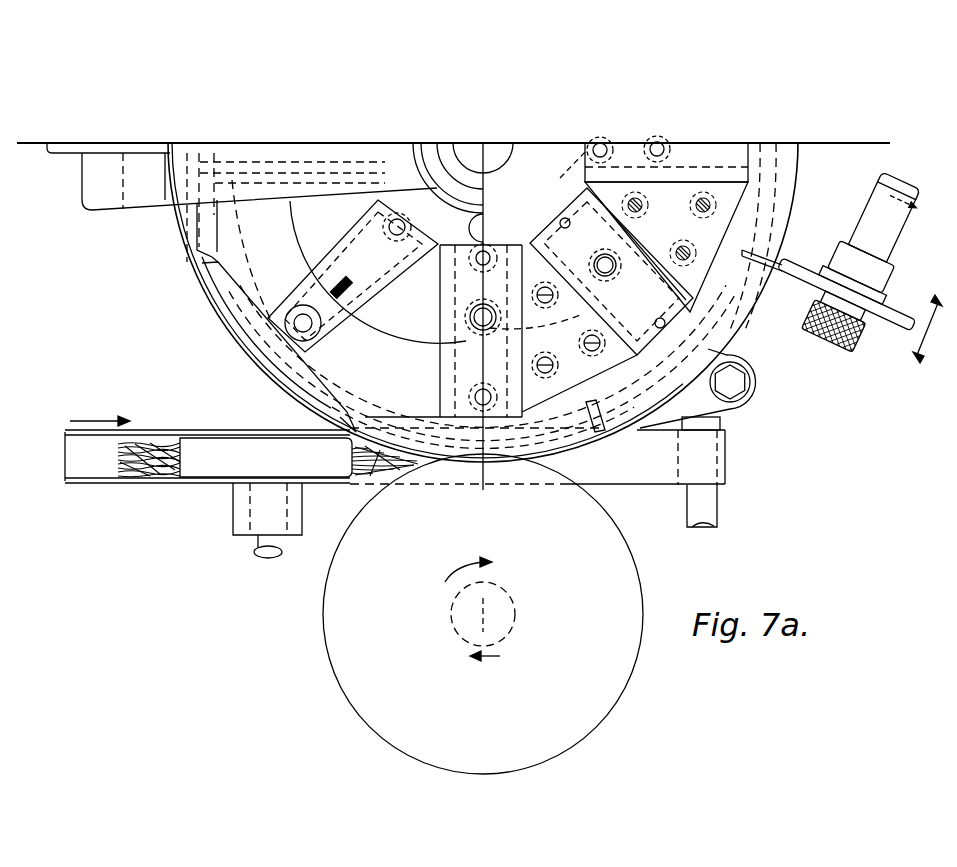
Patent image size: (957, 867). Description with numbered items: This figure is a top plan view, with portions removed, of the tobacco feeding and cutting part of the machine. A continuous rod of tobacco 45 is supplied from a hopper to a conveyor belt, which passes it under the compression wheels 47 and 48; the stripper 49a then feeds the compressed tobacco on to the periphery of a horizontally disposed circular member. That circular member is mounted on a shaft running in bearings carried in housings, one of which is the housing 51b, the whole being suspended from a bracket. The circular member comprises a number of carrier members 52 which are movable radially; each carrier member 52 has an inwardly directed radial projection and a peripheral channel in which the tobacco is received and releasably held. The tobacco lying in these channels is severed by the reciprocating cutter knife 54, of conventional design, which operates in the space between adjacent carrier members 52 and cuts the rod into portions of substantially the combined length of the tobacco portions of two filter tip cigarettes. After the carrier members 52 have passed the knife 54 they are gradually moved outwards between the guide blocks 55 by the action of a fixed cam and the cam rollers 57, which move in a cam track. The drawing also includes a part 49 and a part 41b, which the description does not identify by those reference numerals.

The support post 41b is at (672, 463).
The continuous rod of tobacco 45 is at (152, 464).
The compression wheel 47 is at (197, 455).
The compression wheel 48 is at (348, 611).
The bed 49 is at (216, 483).
The stripper 49a is at (617, 485).
The housing 51b is at (152, 185).
The carrier member 52 is at (743, 143).
The reciprocating cutter knife 54 is at (752, 264).
The guide block 55 is at (698, 230).
The cam roller 57 is at (560, 170).